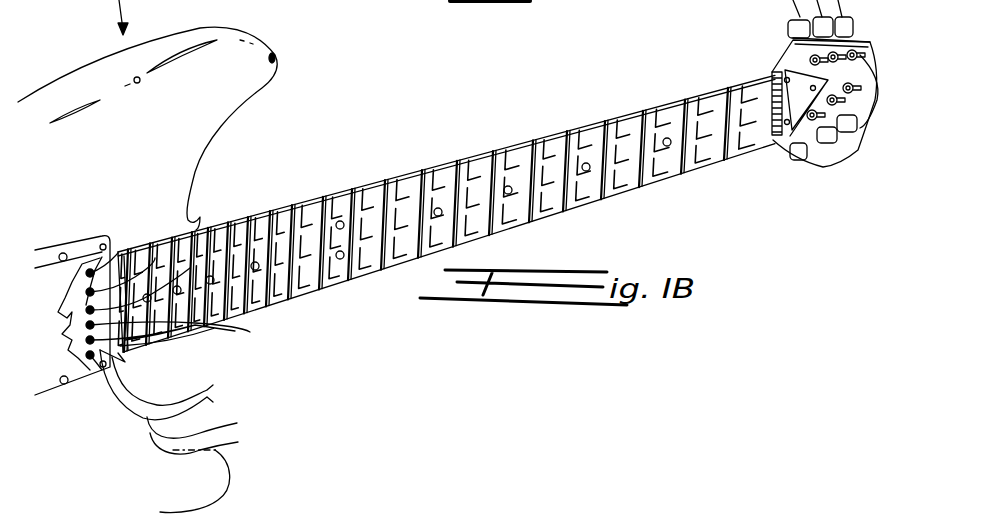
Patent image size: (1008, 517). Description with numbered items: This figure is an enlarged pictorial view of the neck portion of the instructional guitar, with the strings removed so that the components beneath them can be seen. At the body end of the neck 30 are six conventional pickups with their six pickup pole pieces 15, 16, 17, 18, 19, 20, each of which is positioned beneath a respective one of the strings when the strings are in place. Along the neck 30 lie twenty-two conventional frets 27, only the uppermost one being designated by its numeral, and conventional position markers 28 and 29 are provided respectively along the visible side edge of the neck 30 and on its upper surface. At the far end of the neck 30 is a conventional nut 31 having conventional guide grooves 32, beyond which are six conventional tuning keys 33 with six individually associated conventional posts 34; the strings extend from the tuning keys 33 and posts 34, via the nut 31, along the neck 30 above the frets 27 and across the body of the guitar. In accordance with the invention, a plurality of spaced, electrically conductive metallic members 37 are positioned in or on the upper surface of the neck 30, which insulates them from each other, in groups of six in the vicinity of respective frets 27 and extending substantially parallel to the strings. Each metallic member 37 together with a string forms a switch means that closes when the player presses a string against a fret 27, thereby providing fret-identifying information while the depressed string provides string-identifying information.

The pickup pole piece 15 is at (117, 253).
The pickup pole piece 16 is at (157, 240).
The pickup pole piece 17 is at (195, 228).
The pickup pole piece 18 is at (213, 327).
The pickup pole piece 19 is at (173, 338).
The pickup pole piece 20 is at (180, 377).
The fret 27 is at (686, 173).
The position marker 28 is at (507, 148).
The position marker 29 is at (511, 193).
The neck 30 is at (402, 138).
The nut 31 is at (780, 140).
The guide groove 32 is at (773, 77).
The tuning key 33 is at (800, 140).
The post 34 is at (853, 133).
The electrically conductive metallic member 37 is at (291, 204).